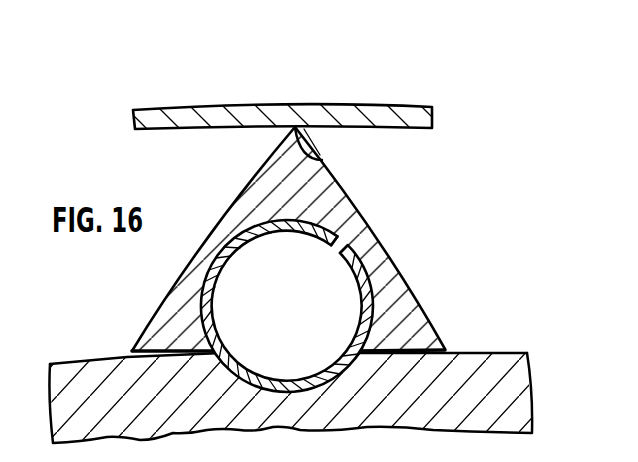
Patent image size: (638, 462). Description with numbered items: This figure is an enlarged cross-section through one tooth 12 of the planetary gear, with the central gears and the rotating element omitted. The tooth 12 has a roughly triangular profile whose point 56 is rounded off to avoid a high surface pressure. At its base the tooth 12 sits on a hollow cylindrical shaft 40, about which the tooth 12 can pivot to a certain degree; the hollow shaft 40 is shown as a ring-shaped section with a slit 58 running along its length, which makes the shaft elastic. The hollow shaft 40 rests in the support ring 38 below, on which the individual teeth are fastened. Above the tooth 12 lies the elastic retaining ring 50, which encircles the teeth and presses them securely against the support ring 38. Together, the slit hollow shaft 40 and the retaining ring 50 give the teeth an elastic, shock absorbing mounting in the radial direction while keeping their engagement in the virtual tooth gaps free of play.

The tooth 12 is at (340, 203).
The support ring 38 is at (463, 373).
The hollow cylindrical shaft 40 is at (366, 306).
The retaining ring 50 is at (434, 118).
The point of the tooth 56 is at (322, 160).
The slit 58 is at (342, 246).